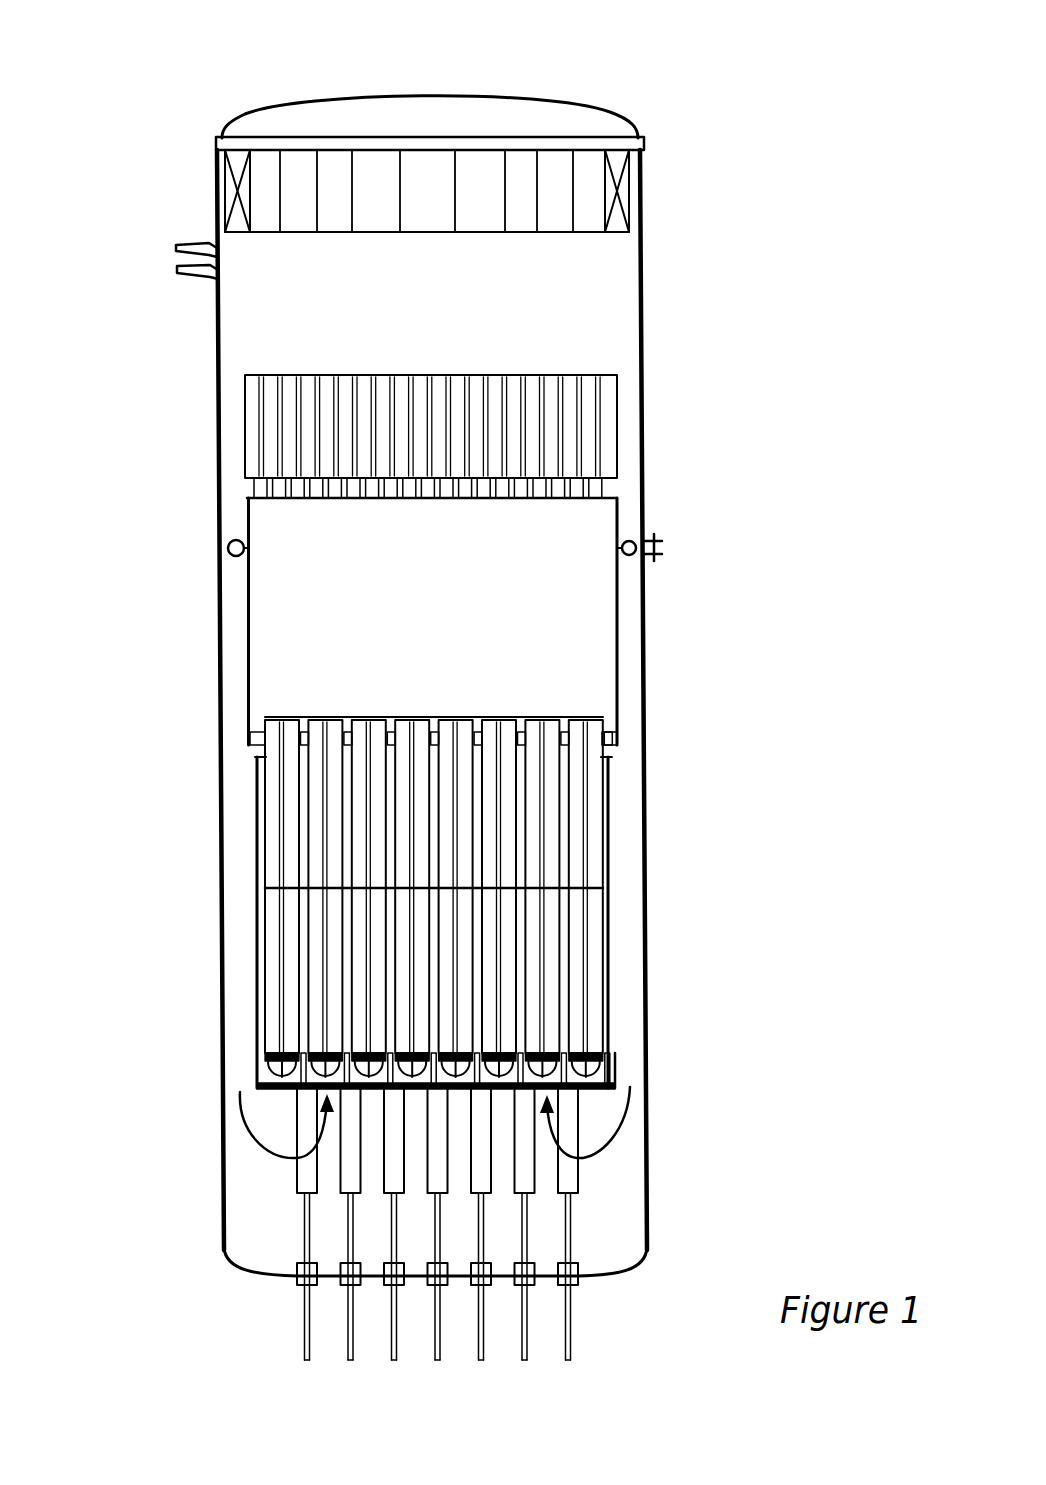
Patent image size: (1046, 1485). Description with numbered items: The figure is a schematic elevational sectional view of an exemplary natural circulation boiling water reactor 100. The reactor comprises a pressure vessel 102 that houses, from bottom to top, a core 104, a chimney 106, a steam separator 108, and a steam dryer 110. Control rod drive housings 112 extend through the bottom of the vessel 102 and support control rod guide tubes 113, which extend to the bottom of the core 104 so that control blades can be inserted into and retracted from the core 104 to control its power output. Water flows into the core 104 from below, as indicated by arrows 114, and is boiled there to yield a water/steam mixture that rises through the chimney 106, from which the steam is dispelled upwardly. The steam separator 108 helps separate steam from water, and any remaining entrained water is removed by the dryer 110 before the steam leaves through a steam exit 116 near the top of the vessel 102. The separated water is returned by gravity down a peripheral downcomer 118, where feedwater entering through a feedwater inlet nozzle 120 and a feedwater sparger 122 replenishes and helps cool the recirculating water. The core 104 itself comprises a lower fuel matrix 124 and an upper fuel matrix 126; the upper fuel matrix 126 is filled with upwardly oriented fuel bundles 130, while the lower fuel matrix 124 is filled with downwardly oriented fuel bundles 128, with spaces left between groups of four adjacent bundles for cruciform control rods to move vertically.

The natural circulation boiling water reactor 100 is at (158, 82).
The pressure vessel 102 is at (641, 417).
The core 104 is at (450, 870).
The chimney 106 is at (619, 611).
The steam separator 108 is at (246, 402).
The steam dryer 110 is at (619, 232).
The control rod drive housings 112 is at (583, 1193).
The control rod guide tubes 113 is at (297, 1172).
The arrows 114 is at (297, 1157).
The steam exit 116 is at (183, 280).
The peripheral downcomer 118 is at (625, 882).
The feedwater inlet nozzle 120 is at (653, 540).
The feedwater sparger 122 is at (229, 545).
The lower fuel matrix 124 is at (605, 966).
The upper fuel matrix 126 is at (609, 807).
The downwardly oriented fuel bundles 128 is at (597, 1003).
The upwardly oriented fuel bundles 130 is at (577, 723).